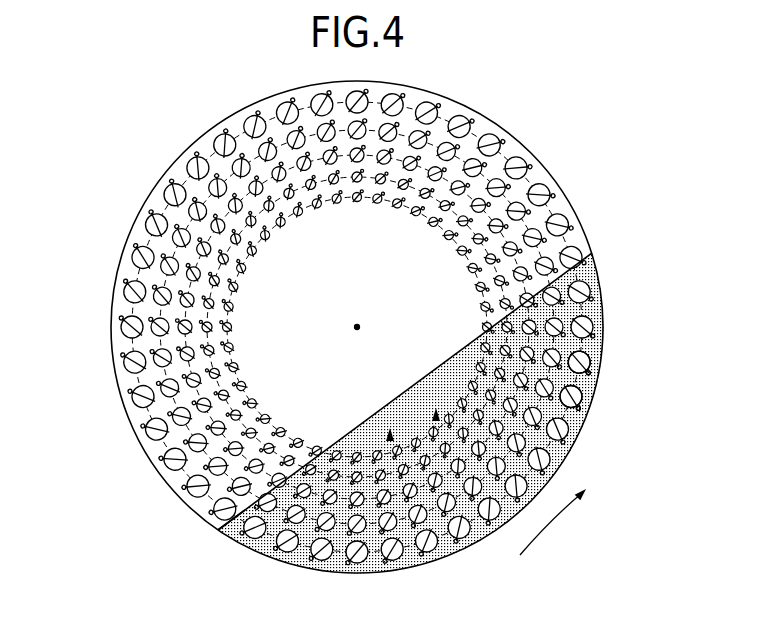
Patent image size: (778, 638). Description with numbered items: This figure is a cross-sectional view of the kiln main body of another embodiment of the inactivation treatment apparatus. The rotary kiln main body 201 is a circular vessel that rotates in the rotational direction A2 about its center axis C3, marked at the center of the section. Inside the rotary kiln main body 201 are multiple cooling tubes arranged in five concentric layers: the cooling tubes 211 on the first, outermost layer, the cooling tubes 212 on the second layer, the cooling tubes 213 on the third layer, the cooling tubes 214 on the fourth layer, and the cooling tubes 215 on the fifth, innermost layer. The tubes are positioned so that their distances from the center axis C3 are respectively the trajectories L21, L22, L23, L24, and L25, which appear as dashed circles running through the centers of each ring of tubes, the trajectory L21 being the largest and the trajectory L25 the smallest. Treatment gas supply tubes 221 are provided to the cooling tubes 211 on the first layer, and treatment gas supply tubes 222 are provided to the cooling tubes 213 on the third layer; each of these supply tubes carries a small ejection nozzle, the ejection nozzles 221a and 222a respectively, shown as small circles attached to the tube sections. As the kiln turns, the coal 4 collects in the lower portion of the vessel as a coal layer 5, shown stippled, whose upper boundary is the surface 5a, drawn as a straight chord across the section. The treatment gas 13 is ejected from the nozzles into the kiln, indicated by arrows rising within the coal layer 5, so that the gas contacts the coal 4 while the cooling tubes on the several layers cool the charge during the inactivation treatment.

The rotary kiln main body 201 is at (571, 449).
The coal 4 is at (334, 568).
The coal layer 5 is at (253, 556).
The surface 5a is at (217, 527).
The trajectory of center axis of cooling tube on first layer L21 is at (130, 344).
The trajectory of center axis of cooling tube on second layer L22 is at (165, 372).
The trajectory of center axis of cooling tube on third layer L23 is at (196, 388).
The trajectory of center axis of cooling tube on fourth layer L24 is at (238, 423).
The trajectory of center axis of cooling tube on fifth layer L25 is at (282, 433).
The cooling tube on first layer 211 is at (578, 381).
The cooling tube on second layer 212 is at (553, 344).
The cooling tube on third layer 213 is at (529, 318).
The cooling tube on fourth layer 214 is at (504, 298).
The cooling tube on fifth layer 215 is at (476, 271).
The treatment gas supply tube 222 is at (591, 360).
The ejection nozzle 222a is at (591, 375).
The treatment gas supply tube 221 is at (582, 398).
The ejection nozzle 221a is at (581, 411).
The treatment gas 13 is at (390, 434).
The rotational direction of rotary kiln main body A2 is at (556, 537).
The center axis of rotary kiln main body C3 is at (371, 302).